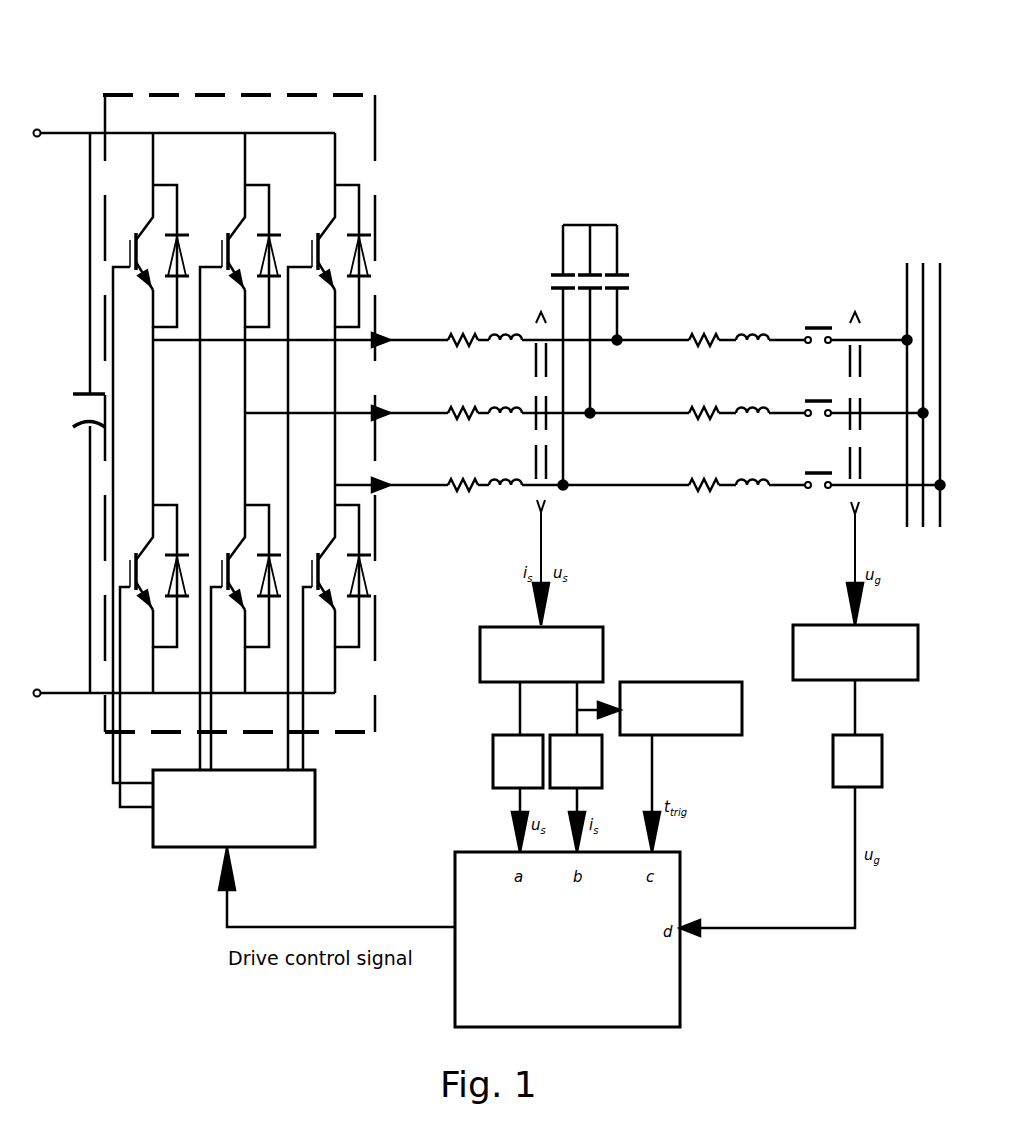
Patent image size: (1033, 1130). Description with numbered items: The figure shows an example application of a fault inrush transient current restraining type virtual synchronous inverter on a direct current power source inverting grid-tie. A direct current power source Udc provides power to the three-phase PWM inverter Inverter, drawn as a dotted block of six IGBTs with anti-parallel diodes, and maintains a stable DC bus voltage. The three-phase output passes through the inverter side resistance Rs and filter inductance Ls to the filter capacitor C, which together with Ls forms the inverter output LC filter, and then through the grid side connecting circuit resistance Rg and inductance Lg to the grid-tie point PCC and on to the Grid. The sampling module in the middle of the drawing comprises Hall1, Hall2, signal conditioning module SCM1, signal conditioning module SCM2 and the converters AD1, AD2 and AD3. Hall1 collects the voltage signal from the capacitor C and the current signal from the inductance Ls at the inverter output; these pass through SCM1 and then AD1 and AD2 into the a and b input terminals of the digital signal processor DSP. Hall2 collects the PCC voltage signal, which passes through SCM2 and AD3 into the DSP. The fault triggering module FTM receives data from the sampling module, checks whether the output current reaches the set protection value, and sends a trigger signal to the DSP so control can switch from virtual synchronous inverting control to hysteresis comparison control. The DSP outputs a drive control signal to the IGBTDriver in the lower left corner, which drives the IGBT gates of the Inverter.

The three-phase PWM inverter Inverter is at (167, 95).
The direct current power source Udc is at (70, 413).
The inverter side resistance Rs is at (463, 394).
The filter inductance Ls is at (505, 391).
The filter capacitor C is at (600, 357).
The grid side connecting circuit resistance Rg is at (704, 394).
The grid side connecting circuit inductance Lg is at (752, 391).
The Hall 1 Hall1 is at (565, 468).
The Hall 2 Hall2 is at (822, 468).
The grid-tie point of common coupling PCC is at (870, 294).
The grid Grid is at (920, 412).
The signal conditioning module 1 SCM1 is at (541, 654).
The signal conditioning module 2 SCM2 is at (855, 652).
The fault triggering module FTM is at (681, 708).
The element AD1 is at (518, 761).
The element AD2 is at (576, 761).
The element AD3 is at (857, 761).
The digital signal processor DSP is at (567, 939).
The IGBT driver IGBTDriver is at (234, 808).